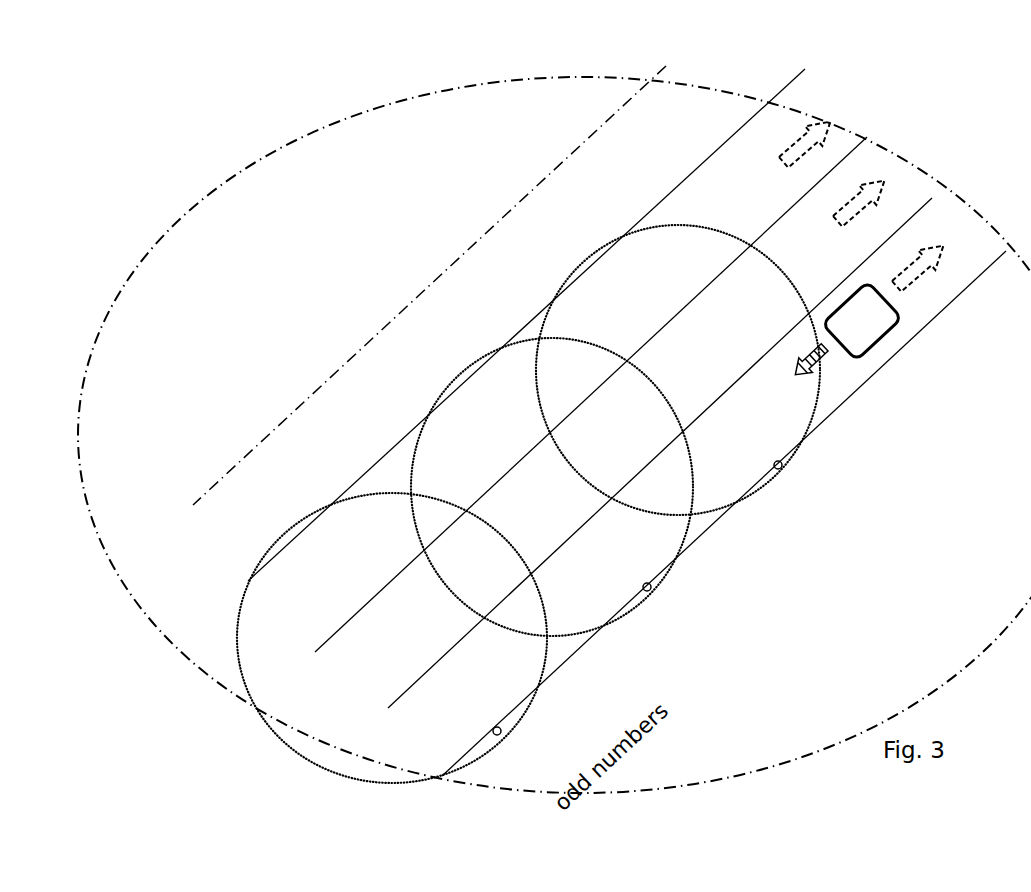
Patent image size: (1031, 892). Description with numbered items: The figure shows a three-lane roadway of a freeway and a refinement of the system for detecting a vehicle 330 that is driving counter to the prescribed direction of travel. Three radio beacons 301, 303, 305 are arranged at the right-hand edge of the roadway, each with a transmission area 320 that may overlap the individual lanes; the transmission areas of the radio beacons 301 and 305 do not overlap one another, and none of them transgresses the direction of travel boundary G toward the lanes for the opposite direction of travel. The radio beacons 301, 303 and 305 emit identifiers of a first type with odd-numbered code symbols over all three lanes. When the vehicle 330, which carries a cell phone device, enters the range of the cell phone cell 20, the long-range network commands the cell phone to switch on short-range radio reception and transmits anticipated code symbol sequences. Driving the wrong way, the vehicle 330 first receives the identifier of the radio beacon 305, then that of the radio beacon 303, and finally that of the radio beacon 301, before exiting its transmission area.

The cell phone cell 20 is at (1030, 486).
The direction of travel boundary G is at (601, 127).
The coverage circles of nodes 320 is at (406, 468).
The vehicle 330 is at (861, 321).
The radio beacon 301 is at (499, 736).
The radio beacon 303 is at (650, 591).
The radio beacon 305 is at (781, 469).